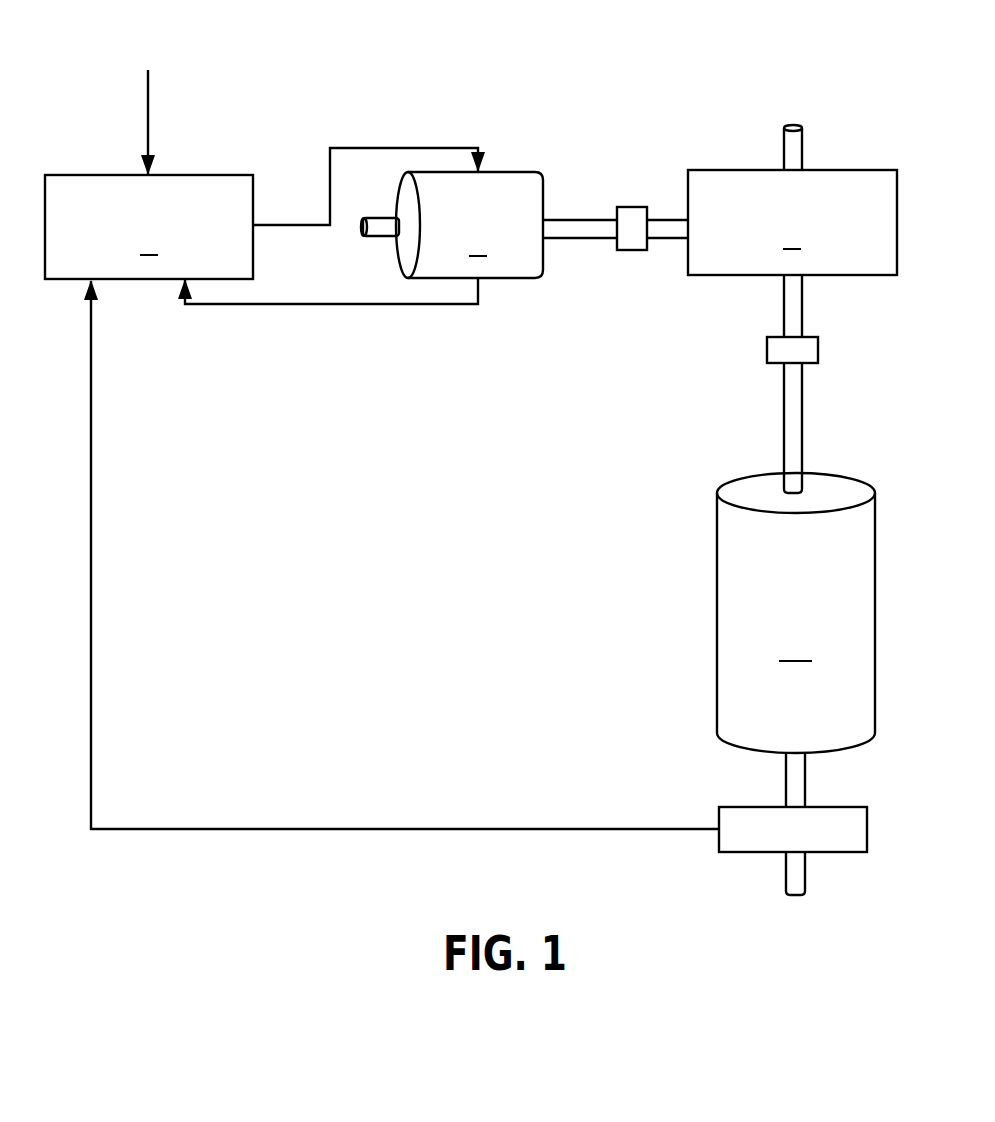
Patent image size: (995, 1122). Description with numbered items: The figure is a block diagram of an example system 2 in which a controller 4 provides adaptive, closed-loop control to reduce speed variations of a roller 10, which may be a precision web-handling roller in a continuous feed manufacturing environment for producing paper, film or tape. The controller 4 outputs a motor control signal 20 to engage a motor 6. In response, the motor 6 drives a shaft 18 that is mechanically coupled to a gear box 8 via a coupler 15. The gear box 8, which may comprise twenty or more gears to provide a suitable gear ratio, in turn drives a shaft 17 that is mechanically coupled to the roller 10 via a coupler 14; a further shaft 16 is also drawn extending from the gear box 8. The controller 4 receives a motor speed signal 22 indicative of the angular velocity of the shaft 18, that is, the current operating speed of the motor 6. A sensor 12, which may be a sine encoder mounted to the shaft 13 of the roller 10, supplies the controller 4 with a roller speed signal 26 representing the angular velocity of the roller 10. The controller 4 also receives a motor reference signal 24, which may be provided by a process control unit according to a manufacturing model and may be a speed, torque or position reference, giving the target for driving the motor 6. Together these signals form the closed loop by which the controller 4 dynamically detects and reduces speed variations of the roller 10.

The system 2 is at (586, 86).
The controller 4 is at (149, 227).
The motor 6 is at (452, 225).
The gear box 8 is at (792, 222).
The roller 10 is at (796, 684).
The sensor 12 is at (763, 807).
The shaft 13 is at (792, 410).
The coupler 14 is at (775, 348).
The coupler 15 is at (629, 208).
The gear box output shaft 16 is at (788, 140).
The shaft 17 is at (792, 300).
The shaft 18 is at (582, 220).
The motor control signal 20 is at (330, 160).
The motor speed signal 22 is at (279, 305).
The motor reference signal 24 is at (151, 118).
The roller speed signal 26 is at (358, 830).